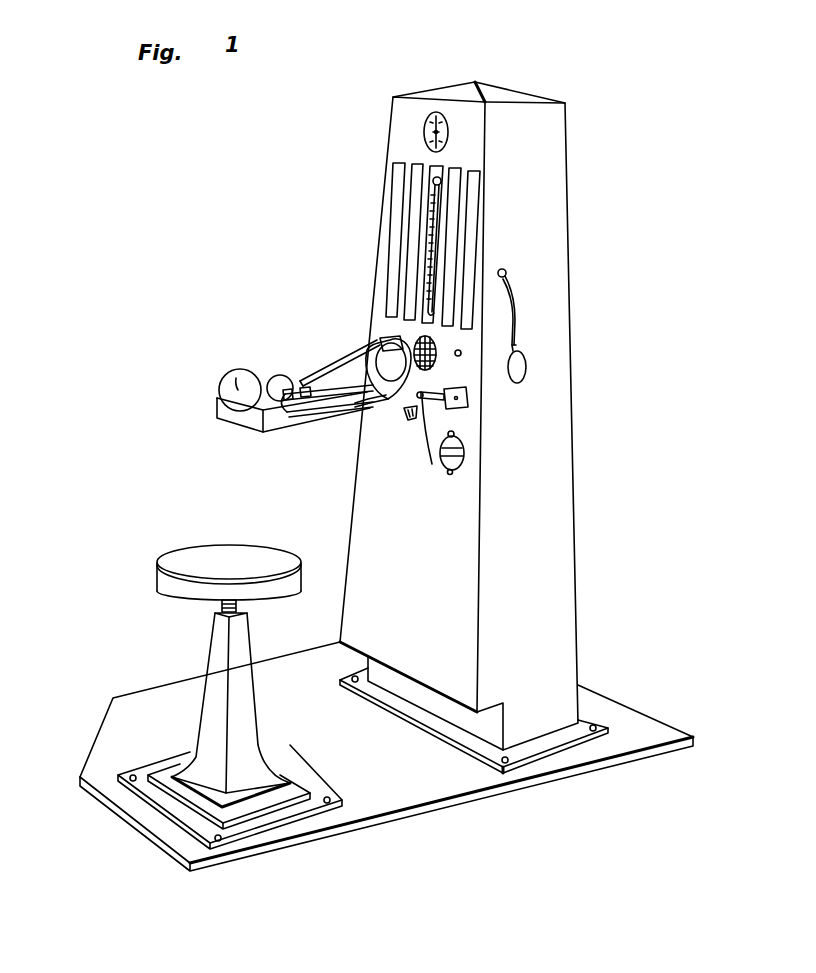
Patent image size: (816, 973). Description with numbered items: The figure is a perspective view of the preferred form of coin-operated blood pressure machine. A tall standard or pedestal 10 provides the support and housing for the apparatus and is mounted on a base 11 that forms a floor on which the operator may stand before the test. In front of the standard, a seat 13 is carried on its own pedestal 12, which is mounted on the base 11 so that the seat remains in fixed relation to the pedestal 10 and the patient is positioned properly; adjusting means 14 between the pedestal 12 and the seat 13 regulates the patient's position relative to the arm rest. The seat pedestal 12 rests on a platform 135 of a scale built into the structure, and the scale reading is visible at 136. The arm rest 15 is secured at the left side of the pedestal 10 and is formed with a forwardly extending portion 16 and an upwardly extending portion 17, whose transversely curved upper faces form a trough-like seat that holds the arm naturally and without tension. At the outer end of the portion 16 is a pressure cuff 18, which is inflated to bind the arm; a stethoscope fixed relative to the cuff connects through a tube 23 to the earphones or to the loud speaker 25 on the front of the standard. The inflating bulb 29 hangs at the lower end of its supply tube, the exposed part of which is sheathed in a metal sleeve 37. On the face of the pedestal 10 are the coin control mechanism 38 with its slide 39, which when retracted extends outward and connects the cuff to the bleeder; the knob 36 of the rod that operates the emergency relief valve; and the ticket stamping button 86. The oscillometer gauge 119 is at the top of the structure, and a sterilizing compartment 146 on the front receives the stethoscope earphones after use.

The standard or pedestal 10 is at (548, 218).
The base 11 is at (630, 722).
The pedestal of seat 12 is at (215, 703).
The seat 13 is at (206, 563).
The adjusting means 14 is at (222, 607).
The arm rest 15 is at (218, 418).
The forwardly extending portion 16 is at (304, 428).
The upwardly extending portion 17 is at (352, 369).
The pressure cuff 18 is at (218, 383).
The tube 23 is at (337, 414).
The loud speaker 25 is at (431, 362).
The bulb 29 is at (523, 362).
The knob 36 is at (433, 462).
The metal sleeve 37 is at (517, 300).
The coin control mechanism 38 is at (474, 402).
The slide 39 is at (440, 400).
The ticket stamping button 86 is at (461, 357).
The oscillometer gauge 119 is at (421, 130).
The platform 135 is at (297, 787).
The scale reading 136 is at (409, 421).
The sterilizing compartment 146 is at (385, 337).